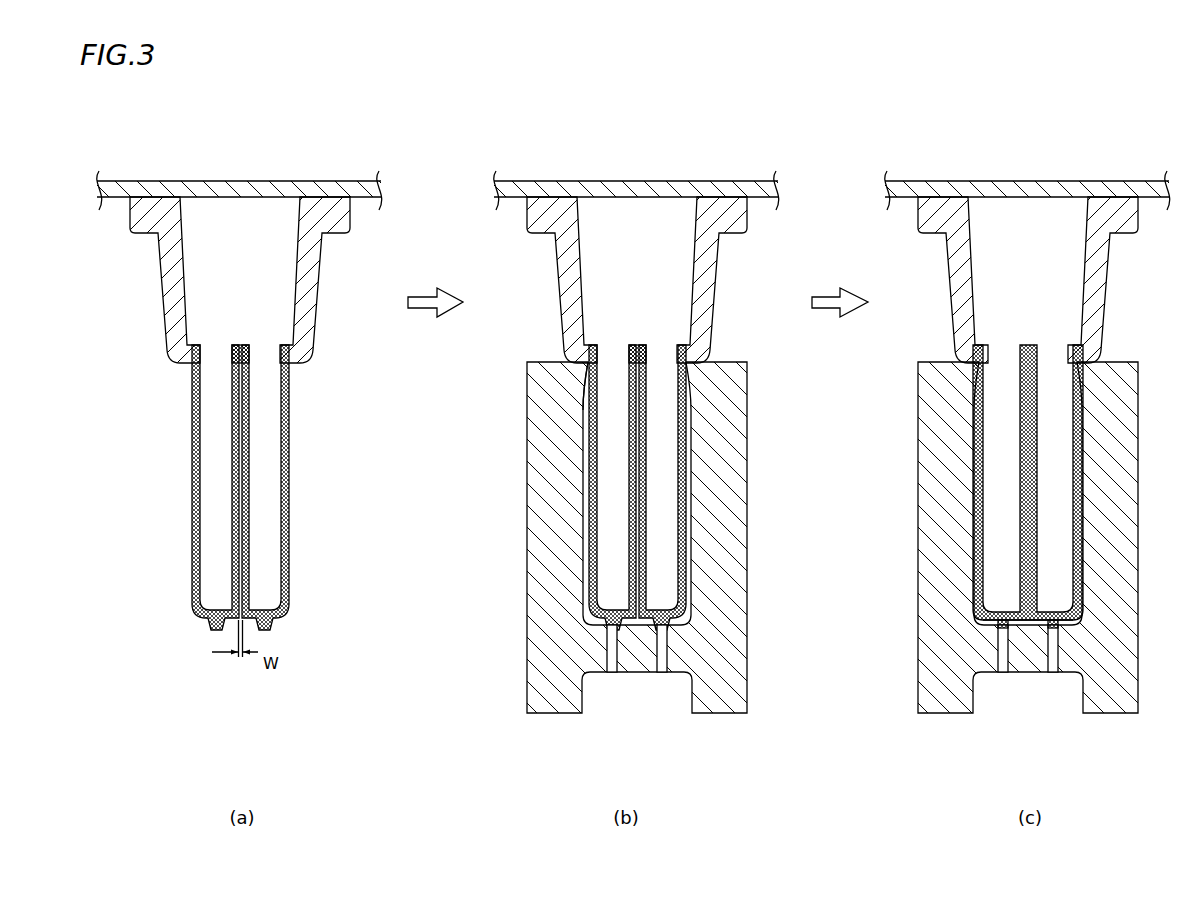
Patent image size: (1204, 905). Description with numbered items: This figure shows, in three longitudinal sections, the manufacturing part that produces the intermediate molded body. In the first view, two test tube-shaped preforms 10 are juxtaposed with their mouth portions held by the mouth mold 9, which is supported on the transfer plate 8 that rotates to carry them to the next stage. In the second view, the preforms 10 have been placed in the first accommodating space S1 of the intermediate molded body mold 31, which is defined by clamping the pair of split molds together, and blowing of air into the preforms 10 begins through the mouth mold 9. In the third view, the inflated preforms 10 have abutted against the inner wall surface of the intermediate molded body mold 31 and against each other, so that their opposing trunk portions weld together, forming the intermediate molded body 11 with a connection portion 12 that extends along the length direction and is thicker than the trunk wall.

The transfer plate 8 is at (240, 182).
The mouth mold 9 is at (335, 195).
The preform 10 is at (192, 520).
The first accommodating space S1 is at (586, 410).
The intermediate molded body mold 31 is at (547, 470).
The intermediate molded body 11 is at (1083, 494).
The connection portion 12 is at (1031, 622).